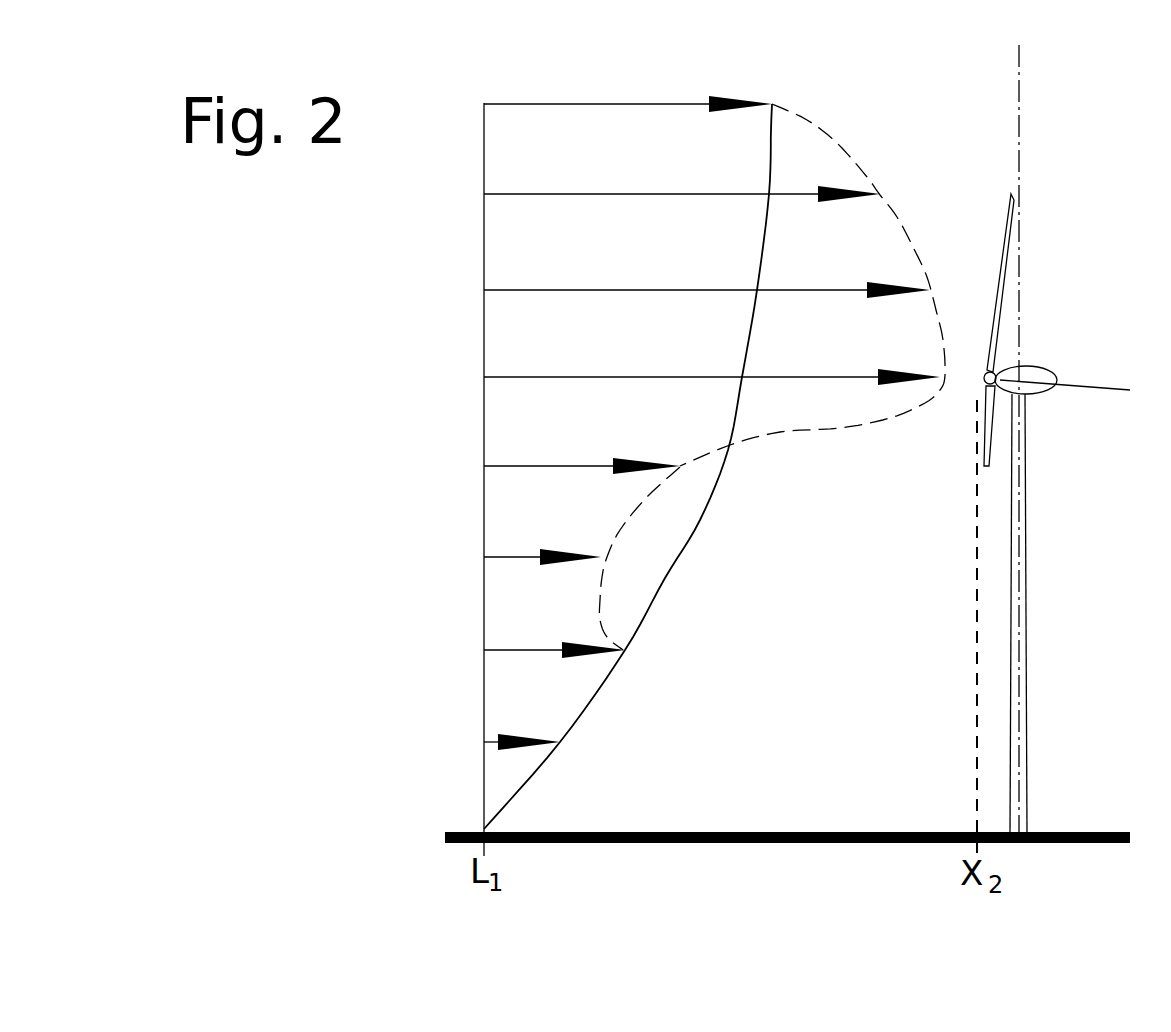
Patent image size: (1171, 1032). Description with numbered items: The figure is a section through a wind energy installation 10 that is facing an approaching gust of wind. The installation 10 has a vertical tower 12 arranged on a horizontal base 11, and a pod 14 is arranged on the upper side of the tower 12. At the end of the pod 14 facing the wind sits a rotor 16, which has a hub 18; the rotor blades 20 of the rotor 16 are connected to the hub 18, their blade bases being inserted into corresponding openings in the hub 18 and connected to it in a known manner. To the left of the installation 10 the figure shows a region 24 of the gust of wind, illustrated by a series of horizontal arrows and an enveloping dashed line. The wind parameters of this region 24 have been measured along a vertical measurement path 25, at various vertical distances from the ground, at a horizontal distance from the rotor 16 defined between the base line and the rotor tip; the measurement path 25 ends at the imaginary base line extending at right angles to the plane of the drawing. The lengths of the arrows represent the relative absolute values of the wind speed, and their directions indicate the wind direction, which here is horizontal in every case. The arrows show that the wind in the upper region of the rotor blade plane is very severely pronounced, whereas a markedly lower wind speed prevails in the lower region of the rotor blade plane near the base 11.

The wind energy installation 10 is at (1021, 438).
The horizontal base 11 is at (770, 843).
The vertical tower 12 is at (1030, 622).
The pod 14 is at (1047, 375).
The rotor 16 is at (981, 346).
The hub 18 is at (985, 380).
The rotor blades 20 is at (1012, 208).
The region of the gust of wind 24 is at (786, 455).
The vertical measurement path 25 is at (484, 445).